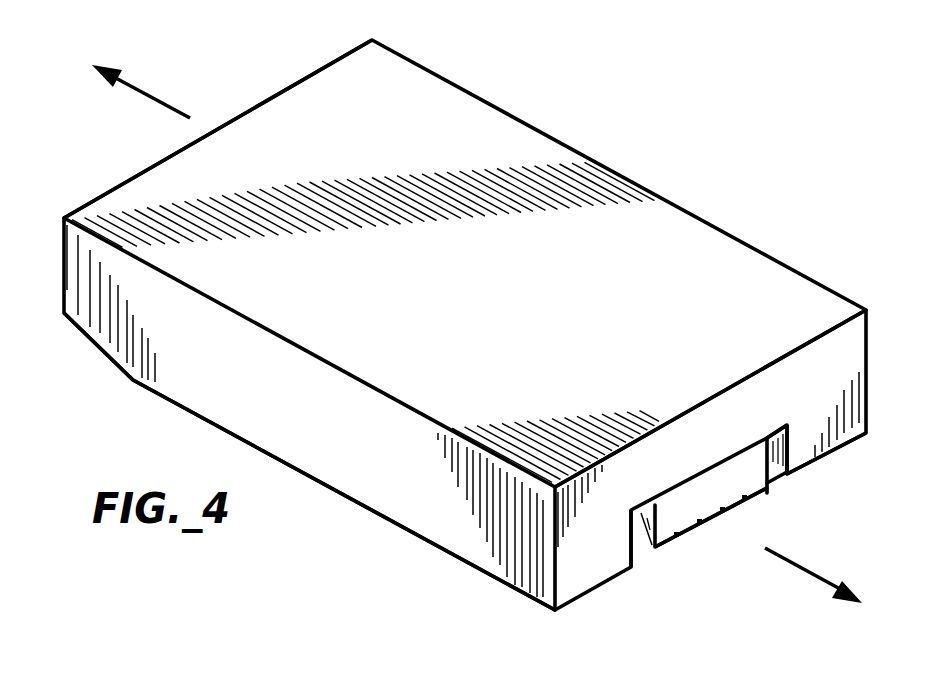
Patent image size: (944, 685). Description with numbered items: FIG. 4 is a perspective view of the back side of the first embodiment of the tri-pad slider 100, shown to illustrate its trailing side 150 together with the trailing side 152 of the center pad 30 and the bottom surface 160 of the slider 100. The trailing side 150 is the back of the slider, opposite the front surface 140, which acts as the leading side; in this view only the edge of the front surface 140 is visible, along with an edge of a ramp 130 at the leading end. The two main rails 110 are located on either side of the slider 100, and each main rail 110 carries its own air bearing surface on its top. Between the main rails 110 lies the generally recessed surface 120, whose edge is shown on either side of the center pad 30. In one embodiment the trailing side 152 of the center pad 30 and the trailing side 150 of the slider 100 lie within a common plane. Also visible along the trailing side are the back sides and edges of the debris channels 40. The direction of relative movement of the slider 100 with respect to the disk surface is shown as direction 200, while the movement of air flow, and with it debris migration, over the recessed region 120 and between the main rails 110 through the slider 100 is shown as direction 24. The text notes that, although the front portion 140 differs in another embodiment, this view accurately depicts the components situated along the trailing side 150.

The tri-pad slider 100 is at (392, 528).
The main rails 110 is at (582, 606).
The central recessed region 120 is at (643, 555).
The ramps or tapers 130 is at (98, 357).
The front surface 140 is at (302, 66).
The trailing side of slider 150 is at (723, 452).
The trailing side of center pad 152 is at (722, 502).
The bottom surface 160 is at (486, 277).
The direction of relative movement 200 is at (158, 97).
The direction of air flow 24 is at (812, 566).
The center pad 30 is at (779, 486).
The debris channels 40 is at (751, 513).